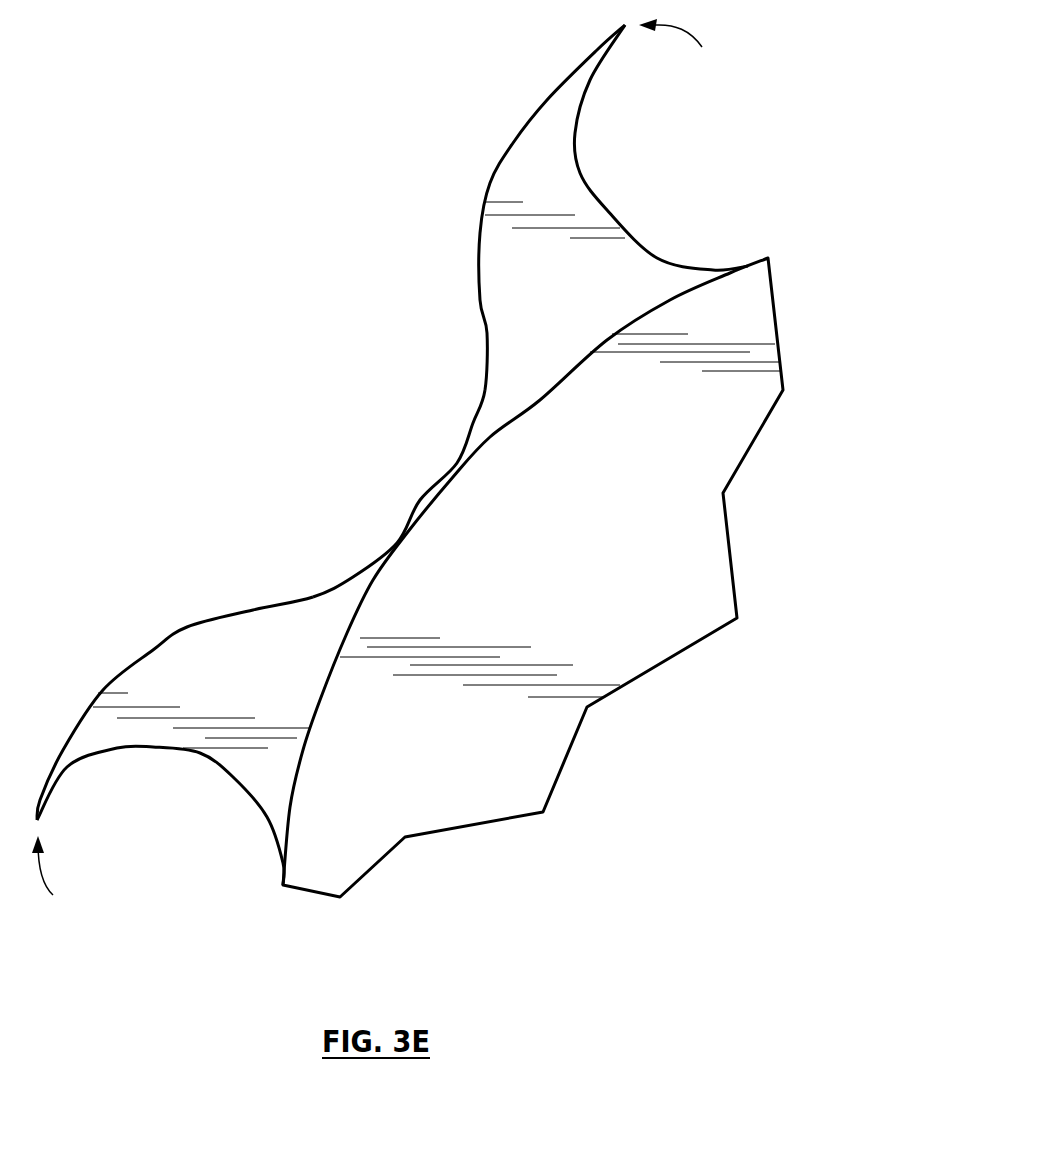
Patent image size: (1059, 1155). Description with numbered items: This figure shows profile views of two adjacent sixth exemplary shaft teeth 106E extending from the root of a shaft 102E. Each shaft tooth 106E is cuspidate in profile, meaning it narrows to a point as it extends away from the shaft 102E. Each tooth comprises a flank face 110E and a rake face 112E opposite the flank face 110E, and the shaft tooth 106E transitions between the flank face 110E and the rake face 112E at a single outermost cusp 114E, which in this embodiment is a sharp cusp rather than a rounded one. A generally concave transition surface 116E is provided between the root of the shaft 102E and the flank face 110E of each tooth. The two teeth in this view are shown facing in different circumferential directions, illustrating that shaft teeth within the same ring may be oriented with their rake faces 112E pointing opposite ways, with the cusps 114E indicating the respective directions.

The shaft 102E is at (588, 582).
The shaft tooth 106E is at (392, 455).
The flank face 110E is at (480, 230).
The rake face 112E is at (607, 207).
The cusp 114E is at (387, 475).
The transition surface 116E is at (473, 420).